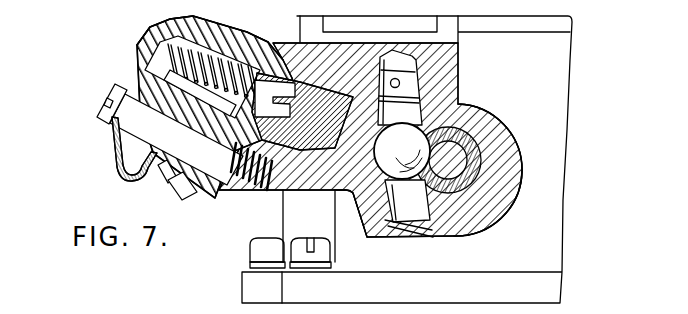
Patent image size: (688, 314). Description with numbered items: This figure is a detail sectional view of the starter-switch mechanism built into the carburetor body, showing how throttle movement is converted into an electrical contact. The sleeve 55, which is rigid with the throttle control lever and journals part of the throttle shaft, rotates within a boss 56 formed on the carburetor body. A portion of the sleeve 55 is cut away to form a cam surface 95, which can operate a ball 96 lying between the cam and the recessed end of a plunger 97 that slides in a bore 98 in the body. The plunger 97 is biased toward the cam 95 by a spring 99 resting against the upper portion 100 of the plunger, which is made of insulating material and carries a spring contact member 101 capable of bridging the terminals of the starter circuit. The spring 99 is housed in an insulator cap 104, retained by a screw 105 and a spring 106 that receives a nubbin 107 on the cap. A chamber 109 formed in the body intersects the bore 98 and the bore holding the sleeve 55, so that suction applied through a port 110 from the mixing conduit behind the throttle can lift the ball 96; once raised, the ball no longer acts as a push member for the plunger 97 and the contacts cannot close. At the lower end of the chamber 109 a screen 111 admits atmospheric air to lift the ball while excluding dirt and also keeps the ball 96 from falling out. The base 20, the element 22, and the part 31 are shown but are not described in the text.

The base 20 is at (349, 165).
The boss 22 is at (484, 141).
The screw 31 is at (176, 203).
The sleeve 55 is at (470, 168).
The boss 56 is at (283, 196).
The cam surface 95 is at (448, 104).
The ball 96 is at (425, 118).
The plunger 97 is at (345, 191).
The bore 98 is at (288, 191).
The spring 99 is at (165, 72).
The upper portion of the plunger 100 is at (270, 38).
The spring contact member 101 is at (242, 190).
The insulator cap 104 is at (158, 22).
The screw 105 is at (114, 123).
The spring 106 is at (114, 152).
The nubbin 107 is at (137, 46).
The chamber 109 is at (401, 84).
The port 110 is at (410, 135).
The screen 111 is at (414, 229).